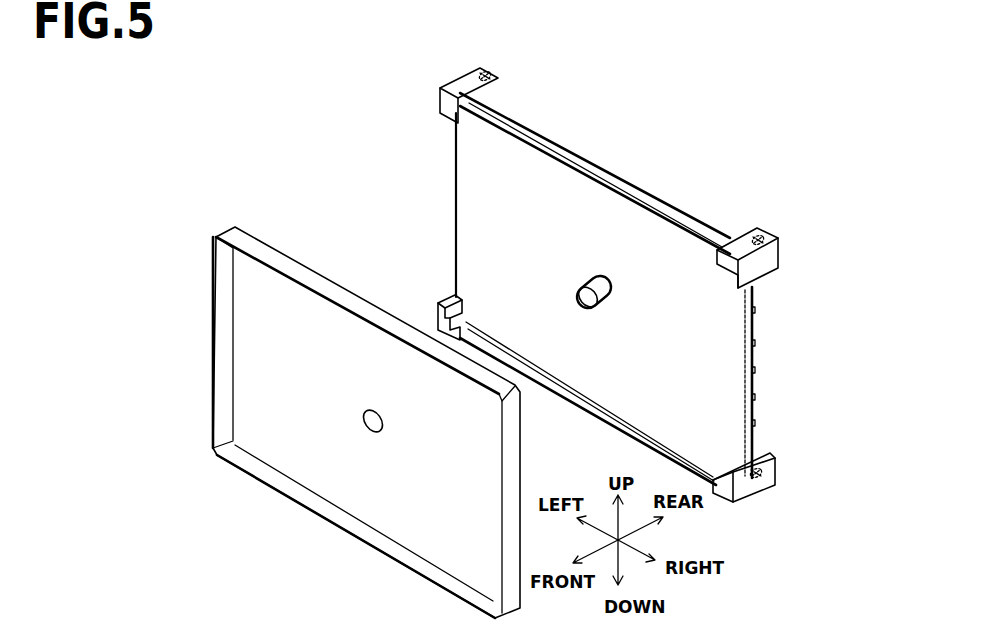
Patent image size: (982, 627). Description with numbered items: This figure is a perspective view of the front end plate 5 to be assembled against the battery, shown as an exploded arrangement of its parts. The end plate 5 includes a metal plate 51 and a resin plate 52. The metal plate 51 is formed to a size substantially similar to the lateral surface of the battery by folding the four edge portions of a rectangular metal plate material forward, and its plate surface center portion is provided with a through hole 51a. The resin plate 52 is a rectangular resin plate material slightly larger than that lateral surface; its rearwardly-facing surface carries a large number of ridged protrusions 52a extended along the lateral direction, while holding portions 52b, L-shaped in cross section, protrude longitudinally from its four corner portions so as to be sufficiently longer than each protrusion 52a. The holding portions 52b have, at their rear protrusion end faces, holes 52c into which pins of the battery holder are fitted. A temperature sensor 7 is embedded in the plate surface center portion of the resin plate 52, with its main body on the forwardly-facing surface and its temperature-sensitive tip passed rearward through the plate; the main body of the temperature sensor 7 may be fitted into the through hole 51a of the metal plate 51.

The end plate 5 is at (260, 150).
The metal plate 51 is at (360, 458).
The through hole 51a is at (373, 410).
The resin plate 52 is at (619, 168).
The protrusions 52a is at (753, 343).
The holding portions 52b is at (458, 83).
The holes 52c is at (494, 74).
The temperature sensor 7 is at (582, 303).